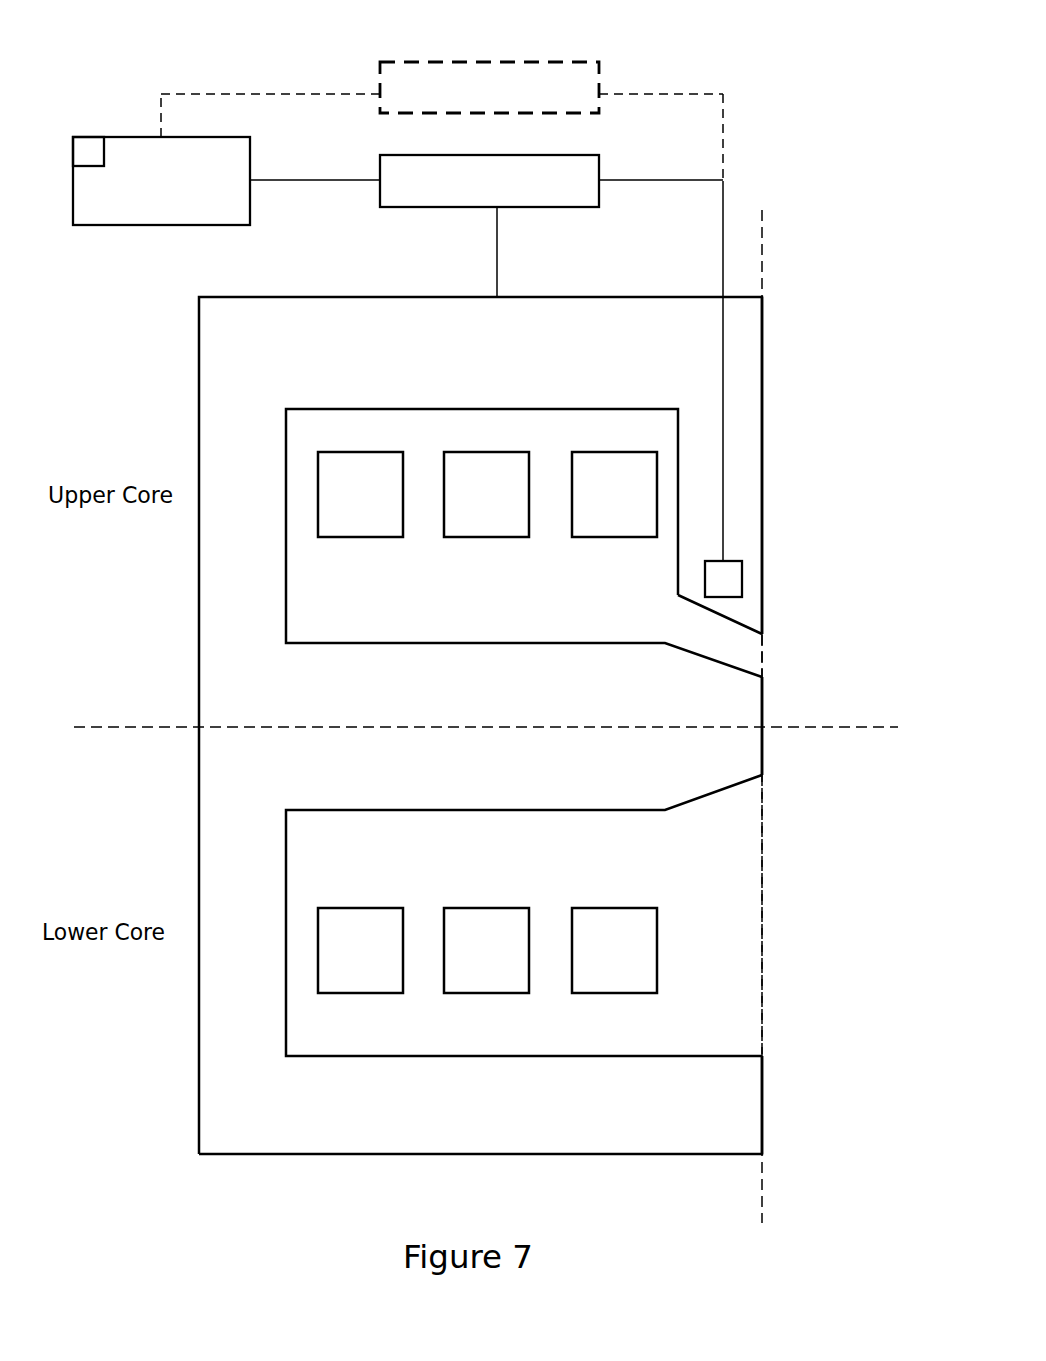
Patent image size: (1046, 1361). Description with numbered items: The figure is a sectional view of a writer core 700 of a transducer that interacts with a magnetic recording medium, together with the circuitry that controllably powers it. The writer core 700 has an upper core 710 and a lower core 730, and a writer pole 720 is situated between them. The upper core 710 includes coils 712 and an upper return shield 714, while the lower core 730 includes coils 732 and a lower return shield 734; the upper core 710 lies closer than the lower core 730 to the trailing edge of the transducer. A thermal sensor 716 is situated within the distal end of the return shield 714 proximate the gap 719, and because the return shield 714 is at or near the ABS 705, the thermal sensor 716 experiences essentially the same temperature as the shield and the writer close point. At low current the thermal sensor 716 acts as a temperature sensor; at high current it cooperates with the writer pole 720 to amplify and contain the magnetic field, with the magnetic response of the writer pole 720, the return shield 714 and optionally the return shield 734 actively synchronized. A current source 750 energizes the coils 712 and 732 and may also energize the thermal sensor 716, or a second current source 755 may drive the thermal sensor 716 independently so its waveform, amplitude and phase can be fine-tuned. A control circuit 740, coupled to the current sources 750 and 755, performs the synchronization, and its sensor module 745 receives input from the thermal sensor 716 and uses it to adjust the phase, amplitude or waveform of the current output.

The writer core 700 is at (836, 289).
The ABS 705 is at (810, 876).
The upper core 710 is at (155, 427).
The coils 712 is at (493, 568).
The upper return shield 714 is at (762, 390).
The thermal sensor 716 is at (742, 570).
The gap 719 is at (790, 662).
The writer pole 720 is at (762, 697).
The lower core 730 is at (155, 1014).
The coils 732 is at (477, 887).
The lower return shield 734 is at (762, 1103).
The control circuit 740 is at (136, 226).
The sensor module 745 is at (87, 147).
The current source 750 is at (418, 208).
The second current source 755 is at (502, 60).